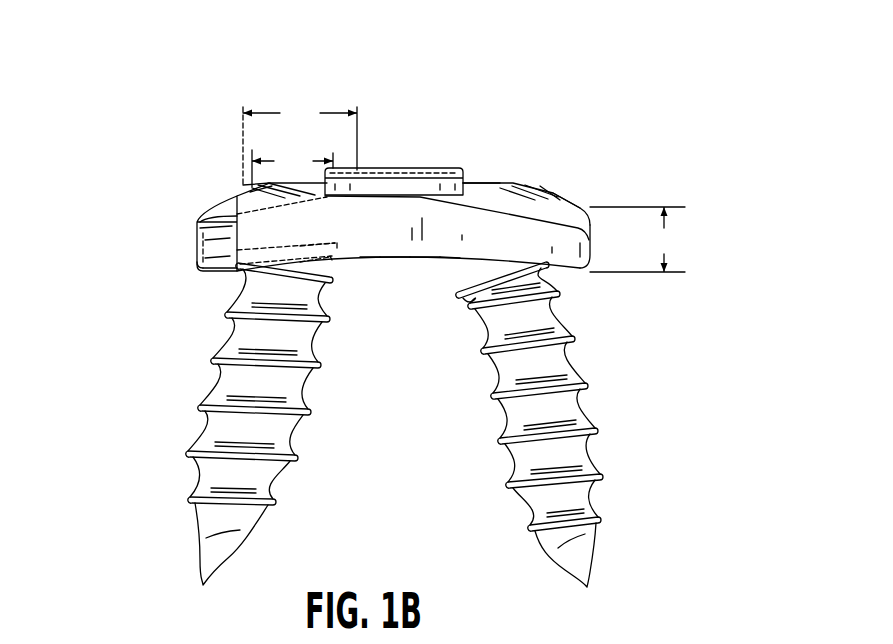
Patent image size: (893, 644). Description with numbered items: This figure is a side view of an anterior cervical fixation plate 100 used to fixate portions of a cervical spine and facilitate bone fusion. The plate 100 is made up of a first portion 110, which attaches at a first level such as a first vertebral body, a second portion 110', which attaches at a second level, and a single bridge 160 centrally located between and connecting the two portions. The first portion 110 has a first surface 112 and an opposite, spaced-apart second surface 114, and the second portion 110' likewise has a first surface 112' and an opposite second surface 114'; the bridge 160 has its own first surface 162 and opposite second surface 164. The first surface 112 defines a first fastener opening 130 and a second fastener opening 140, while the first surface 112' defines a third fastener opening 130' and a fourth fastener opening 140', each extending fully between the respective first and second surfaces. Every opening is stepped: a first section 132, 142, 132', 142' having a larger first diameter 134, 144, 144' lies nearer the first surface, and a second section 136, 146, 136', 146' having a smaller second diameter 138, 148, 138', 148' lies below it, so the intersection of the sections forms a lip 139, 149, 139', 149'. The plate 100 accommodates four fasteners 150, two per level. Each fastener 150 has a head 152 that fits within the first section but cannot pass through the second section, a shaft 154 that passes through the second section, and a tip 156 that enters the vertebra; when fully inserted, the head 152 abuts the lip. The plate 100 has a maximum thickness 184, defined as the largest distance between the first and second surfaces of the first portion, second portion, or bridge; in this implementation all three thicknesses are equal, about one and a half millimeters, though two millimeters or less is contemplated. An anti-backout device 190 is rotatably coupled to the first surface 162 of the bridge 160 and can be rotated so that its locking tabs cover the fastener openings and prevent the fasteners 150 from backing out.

The anterior cervical fixation plate 100 is at (673, 159).
The first portion 110 is at (326, 147).
The second portion 110' is at (604, 187).
The first surface 112 is at (198, 198).
The first surface 112' is at (506, 193).
The second surface 114 is at (259, 381).
The second surface 114' is at (540, 396).
The first fastener opening 130 is at (168, 194).
The second fastener opening 140 is at (282, 205).
The third fastener opening 130' is at (217, 239).
The fourth fastener opening 140' is at (217, 257).
The first section 132 is at (401, 312).
The first section 142 is at (410, 328).
The first section 132' is at (420, 346).
The first section 142' is at (390, 363).
The first diameter 134 is at (300, 133).
The second section 136 is at (331, 306).
The second section 146 is at (328, 330).
The second section 136' is at (346, 341).
The second section 146' is at (345, 365).
The second diameter 138 is at (292, 165).
The second diameter 138' is at (291, 189).
The lip 139 is at (161, 279).
The lip 149 is at (286, 246).
The lip 139' is at (286, 260).
The lip 149' is at (200, 265).
The first diameter 144 is at (369, 115).
The first diameter 144' is at (566, 200).
The second diameter 148 is at (244, 115).
The second diameter 148' is at (529, 192).
The fastener 150 is at (177, 489).
The head 152 is at (238, 190).
The shaft 154 is at (223, 383).
The tip 156 is at (203, 585).
The bridge 160 is at (399, 265).
The first surface 162 is at (480, 183).
The second surface 164 is at (418, 262).
The maximum thickness 184 is at (637, 239).
The anti-backout device 190 is at (399, 154).